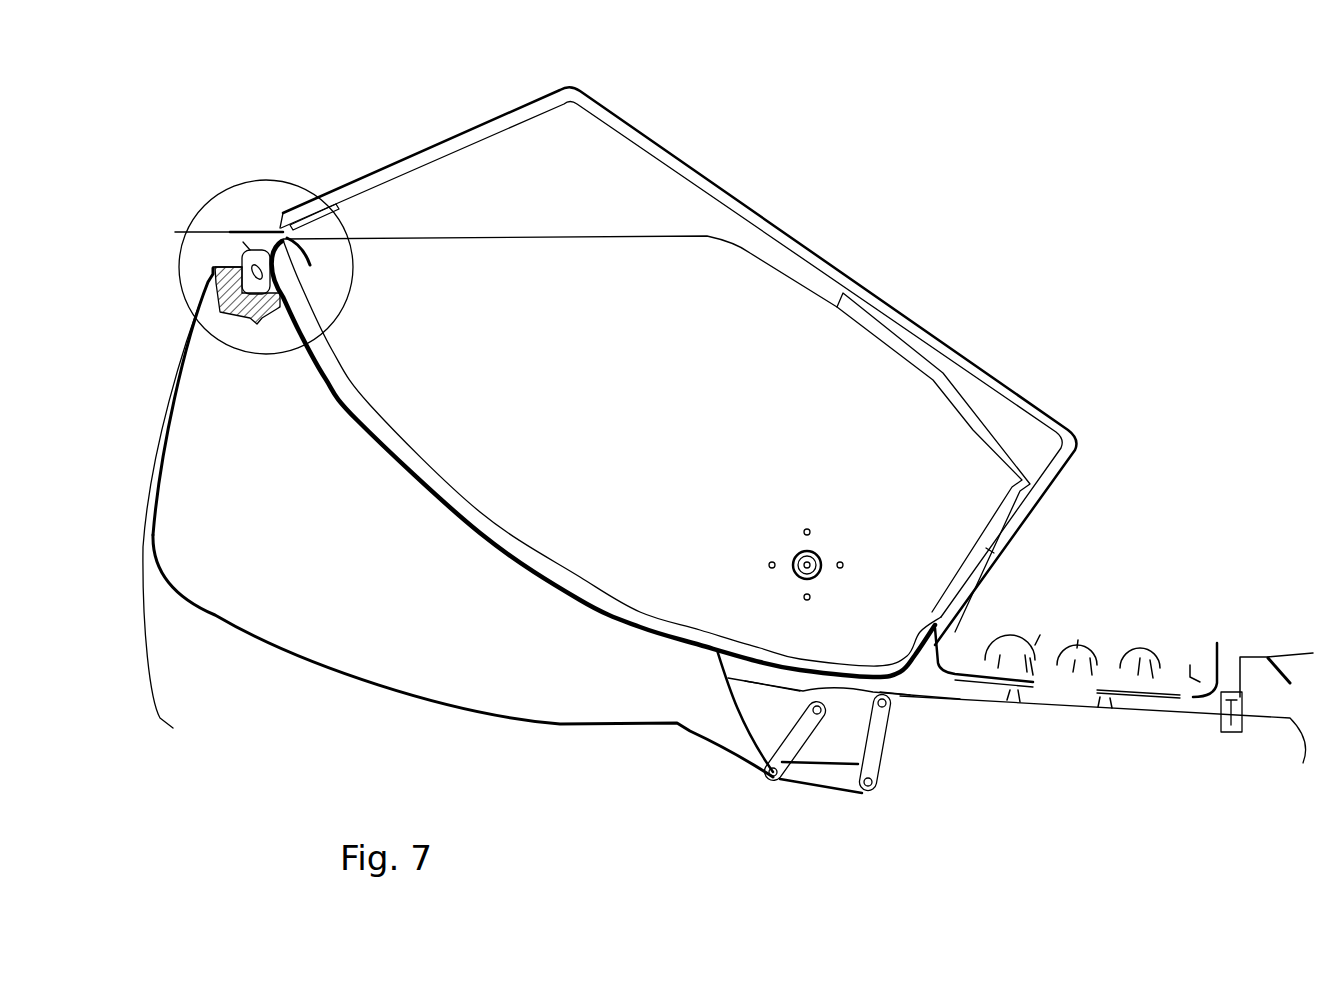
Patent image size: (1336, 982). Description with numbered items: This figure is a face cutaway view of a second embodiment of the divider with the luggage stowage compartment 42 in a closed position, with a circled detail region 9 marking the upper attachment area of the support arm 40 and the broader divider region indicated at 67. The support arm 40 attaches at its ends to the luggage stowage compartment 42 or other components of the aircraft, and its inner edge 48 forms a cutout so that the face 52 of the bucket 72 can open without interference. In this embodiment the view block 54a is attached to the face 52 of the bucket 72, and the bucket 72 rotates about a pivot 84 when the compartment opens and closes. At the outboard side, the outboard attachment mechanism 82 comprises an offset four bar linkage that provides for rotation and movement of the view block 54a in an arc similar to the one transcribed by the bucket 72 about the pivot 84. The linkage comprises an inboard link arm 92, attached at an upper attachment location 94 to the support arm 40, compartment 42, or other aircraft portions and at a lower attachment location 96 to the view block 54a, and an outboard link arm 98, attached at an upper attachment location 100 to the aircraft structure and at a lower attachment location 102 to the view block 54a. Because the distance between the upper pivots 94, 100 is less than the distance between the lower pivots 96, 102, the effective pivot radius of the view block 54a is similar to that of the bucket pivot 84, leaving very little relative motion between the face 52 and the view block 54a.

The detail view circle 9 is at (231, 185).
The support arm 40 is at (180, 348).
The luggage stowage compartment 42 is at (767, 221).
The inner edge 48 is at (163, 397).
The face 52 is at (588, 607).
The view block 54a is at (343, 633).
The quarter panel 67 is at (116, 506).
The bucket 72 is at (523, 236).
The outboard attachment mechanism 82 is at (959, 778).
The pivot 84 is at (810, 556).
The inboard link arm 92 is at (787, 742).
The upper attachment location 94 is at (806, 702).
The lower attachment location 96 is at (770, 780).
The outboard link arm 98 is at (888, 740).
The upper attachment location 100 is at (892, 706).
The lower attachment location 102 is at (880, 777).